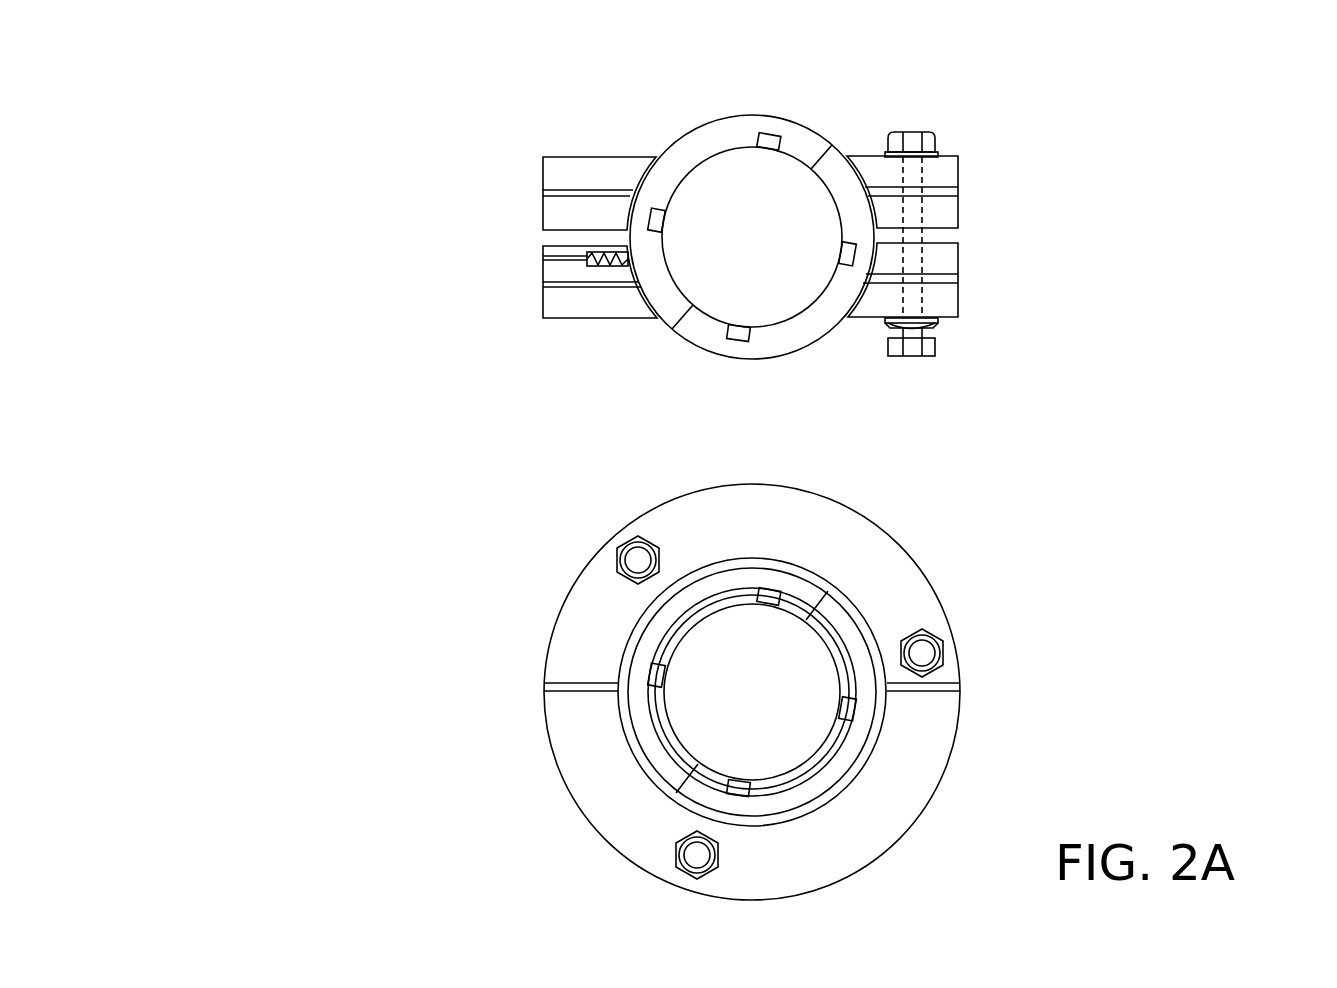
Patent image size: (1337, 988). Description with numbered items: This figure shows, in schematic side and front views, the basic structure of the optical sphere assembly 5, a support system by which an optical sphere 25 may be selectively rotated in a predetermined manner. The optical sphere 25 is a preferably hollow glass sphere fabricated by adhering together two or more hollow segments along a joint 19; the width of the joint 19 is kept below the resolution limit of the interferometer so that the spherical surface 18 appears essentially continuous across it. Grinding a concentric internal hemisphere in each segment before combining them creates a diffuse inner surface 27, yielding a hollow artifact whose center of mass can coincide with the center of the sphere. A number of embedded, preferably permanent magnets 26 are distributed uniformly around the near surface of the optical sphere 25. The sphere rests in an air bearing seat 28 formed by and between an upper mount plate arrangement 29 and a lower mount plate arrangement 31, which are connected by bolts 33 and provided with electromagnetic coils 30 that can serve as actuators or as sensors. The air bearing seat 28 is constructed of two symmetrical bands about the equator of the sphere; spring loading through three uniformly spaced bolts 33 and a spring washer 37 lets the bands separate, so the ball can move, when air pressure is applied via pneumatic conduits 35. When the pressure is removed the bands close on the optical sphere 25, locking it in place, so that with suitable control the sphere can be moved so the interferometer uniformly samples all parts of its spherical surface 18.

The optical sphere assembly 5 is at (1177, 290).
The spherical surface 18 is at (795, 123).
The joint 19 is at (828, 147).
The optical sphere 25 is at (803, 597).
The magnets 26 is at (757, 137).
The diffuse inner surface 27 is at (660, 740).
The air bearing seat 28 is at (643, 305).
The upper mount plate arrangement 29 is at (943, 168).
The electromagnetic coils 30 is at (543, 258).
The lower mount plate arrangement 31 is at (948, 257).
The bolts 33 is at (922, 203).
The pneumatic conduits 35 is at (535, 292).
The spring washer 37 is at (940, 332).